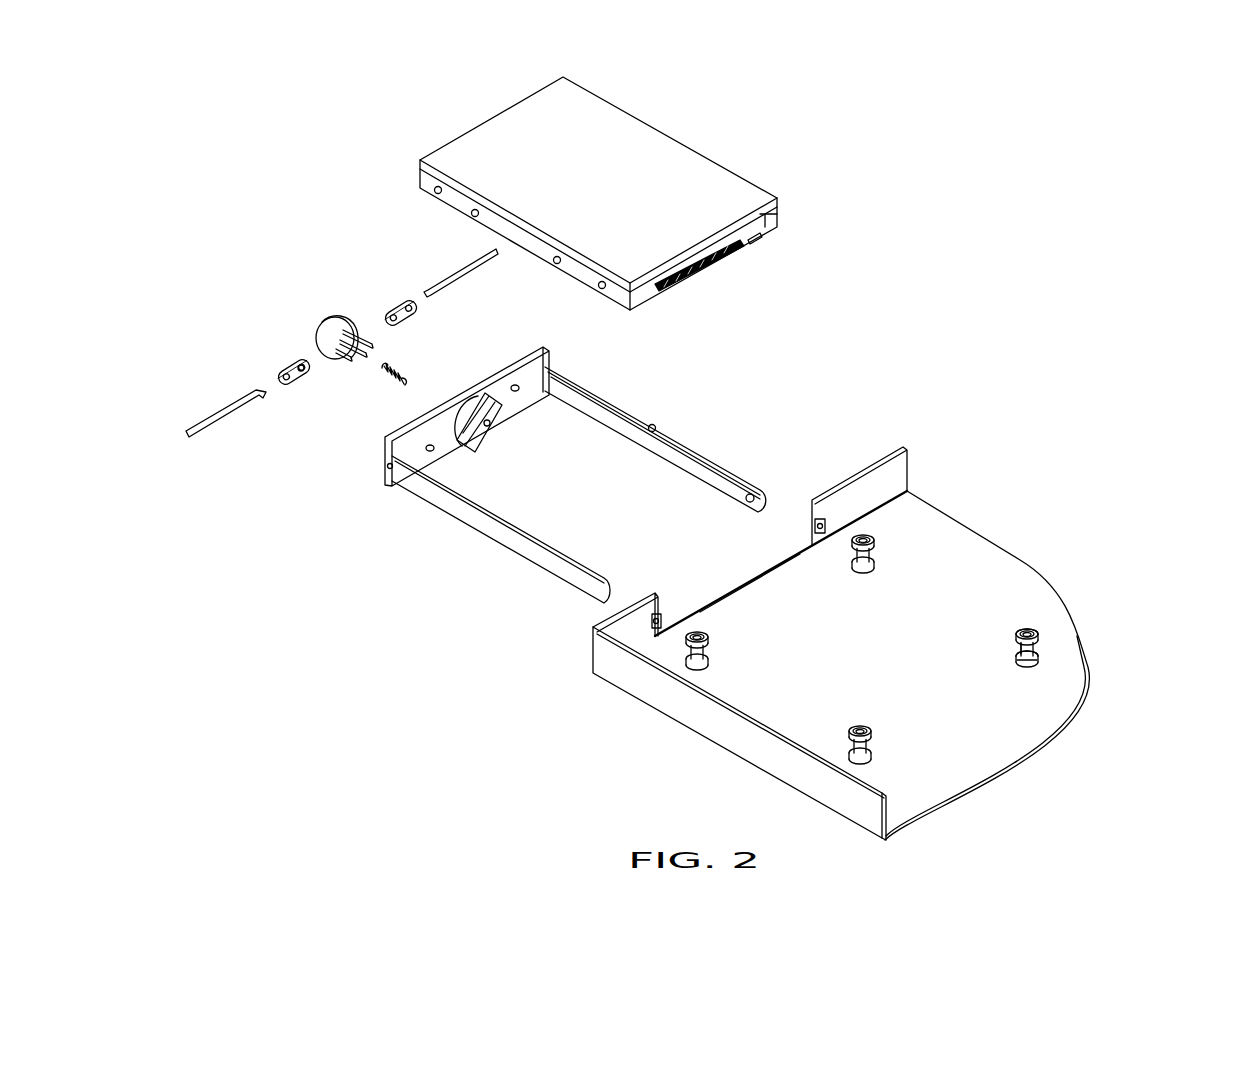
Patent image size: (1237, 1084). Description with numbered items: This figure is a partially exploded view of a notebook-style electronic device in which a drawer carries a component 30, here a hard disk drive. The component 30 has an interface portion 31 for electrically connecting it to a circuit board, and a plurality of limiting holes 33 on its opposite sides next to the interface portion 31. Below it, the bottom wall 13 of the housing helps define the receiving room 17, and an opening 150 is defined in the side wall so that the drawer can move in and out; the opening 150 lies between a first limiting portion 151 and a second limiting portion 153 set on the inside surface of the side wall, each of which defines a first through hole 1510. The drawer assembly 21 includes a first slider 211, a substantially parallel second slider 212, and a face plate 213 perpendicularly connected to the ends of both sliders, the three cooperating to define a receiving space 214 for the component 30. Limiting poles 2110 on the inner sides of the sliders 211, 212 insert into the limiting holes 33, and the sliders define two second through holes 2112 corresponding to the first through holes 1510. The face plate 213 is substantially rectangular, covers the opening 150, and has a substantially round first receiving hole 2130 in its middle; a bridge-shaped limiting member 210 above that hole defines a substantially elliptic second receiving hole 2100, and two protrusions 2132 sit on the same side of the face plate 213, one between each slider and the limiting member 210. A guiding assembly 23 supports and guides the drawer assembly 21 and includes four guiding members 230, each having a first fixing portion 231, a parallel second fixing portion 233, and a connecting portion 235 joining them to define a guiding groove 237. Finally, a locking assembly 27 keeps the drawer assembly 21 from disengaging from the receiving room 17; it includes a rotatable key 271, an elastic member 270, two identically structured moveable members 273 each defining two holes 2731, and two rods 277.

The bottom wall 13 is at (869, 641).
The receiving room 17 is at (779, 660).
The drawer assembly 21 is at (652, 411).
The guiding assembly 23 is at (873, 733).
The locking assembly 27 is at (343, 280).
The component 30 is at (592, 193).
The interface portion 31 is at (727, 252).
The limiting holes 33 is at (418, 178).
The opening 150 is at (787, 556).
The first limiting portion 151 is at (660, 620).
The second limiting portion 153 is at (829, 508).
The first through hole 1510 is at (650, 619).
The limiting member 210 is at (475, 450).
The first slider 211 is at (497, 527).
The second slider 212 is at (688, 447).
The face plate 213 is at (518, 363).
The receiving space 214 is at (697, 472).
The guiding member 230 is at (1107, 673).
The first fixing portion 231 is at (1038, 670).
The second fixing portion 233 is at (1040, 628).
The connecting portion 235 is at (1037, 646).
The guiding groove 237 is at (1010, 647).
The elastic member 270 is at (395, 363).
The rotatable key 271 is at (330, 318).
The moveable members 273 is at (297, 367).
The rods 277 is at (220, 410).
The second receiving hole 2100 is at (487, 425).
The limiting poles 2110 is at (748, 499).
The second through holes 2112 is at (386, 467).
The first receiving hole 2130 is at (467, 412).
The protrusions 2132 is at (435, 452).
The holes 2731 is at (312, 379).